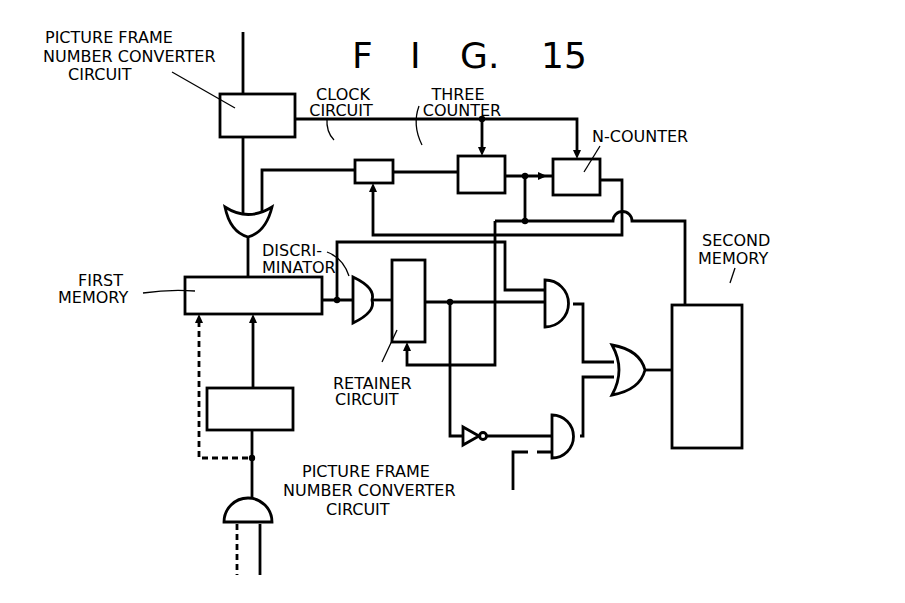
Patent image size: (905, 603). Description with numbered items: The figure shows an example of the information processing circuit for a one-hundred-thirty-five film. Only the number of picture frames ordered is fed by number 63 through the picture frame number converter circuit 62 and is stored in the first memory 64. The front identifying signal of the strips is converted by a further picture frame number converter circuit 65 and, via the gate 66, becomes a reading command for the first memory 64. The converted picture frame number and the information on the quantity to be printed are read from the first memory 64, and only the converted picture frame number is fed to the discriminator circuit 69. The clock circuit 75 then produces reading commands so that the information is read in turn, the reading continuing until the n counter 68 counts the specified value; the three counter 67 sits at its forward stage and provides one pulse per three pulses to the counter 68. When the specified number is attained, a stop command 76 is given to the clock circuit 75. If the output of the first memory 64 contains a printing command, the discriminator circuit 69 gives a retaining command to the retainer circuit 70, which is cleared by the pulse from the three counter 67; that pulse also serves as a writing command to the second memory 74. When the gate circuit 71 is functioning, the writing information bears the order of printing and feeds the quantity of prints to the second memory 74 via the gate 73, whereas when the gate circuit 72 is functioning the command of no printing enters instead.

The picture frame number converter circuit 62 is at (281, 432).
The number 63 is at (256, 356).
The first memory 64 is at (220, 277).
The picture frame number converter circuit 65 is at (270, 94).
The gate 66 is at (228, 214).
The 3 counter 67 is at (468, 156).
The n counter 68 is at (560, 159).
The discriminator circuit 69 is at (358, 325).
The retainer circuit 70 is at (425, 278).
The gate circuit 71 is at (560, 291).
The gate circuit 72 is at (560, 458).
The gate 73 is at (625, 346).
The second memory 74 is at (713, 305).
The clock circuit 75 is at (368, 160).
The stop command 76 is at (623, 197).